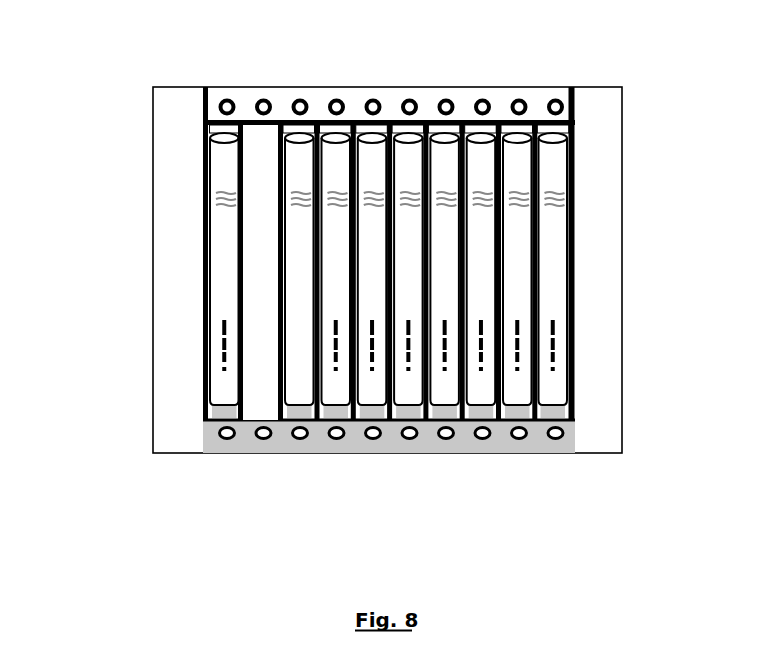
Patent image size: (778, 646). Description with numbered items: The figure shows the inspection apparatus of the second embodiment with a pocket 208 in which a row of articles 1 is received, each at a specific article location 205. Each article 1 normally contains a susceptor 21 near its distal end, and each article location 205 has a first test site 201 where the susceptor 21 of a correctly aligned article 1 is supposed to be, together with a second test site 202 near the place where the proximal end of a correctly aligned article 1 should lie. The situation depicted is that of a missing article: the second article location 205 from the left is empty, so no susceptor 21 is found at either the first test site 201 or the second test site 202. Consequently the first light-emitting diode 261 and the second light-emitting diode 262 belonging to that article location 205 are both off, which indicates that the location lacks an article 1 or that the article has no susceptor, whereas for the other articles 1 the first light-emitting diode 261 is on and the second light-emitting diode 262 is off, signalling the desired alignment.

The article 1 is at (413, 395).
The susceptor 21 is at (557, 340).
The first test site 201 is at (218, 352).
The second test site 202 is at (217, 189).
The article location 205 is at (272, 133).
The pocket 208 is at (607, 142).
The first light-emitting diode 261 is at (228, 445).
The second light-emitting diode 262 is at (262, 95).